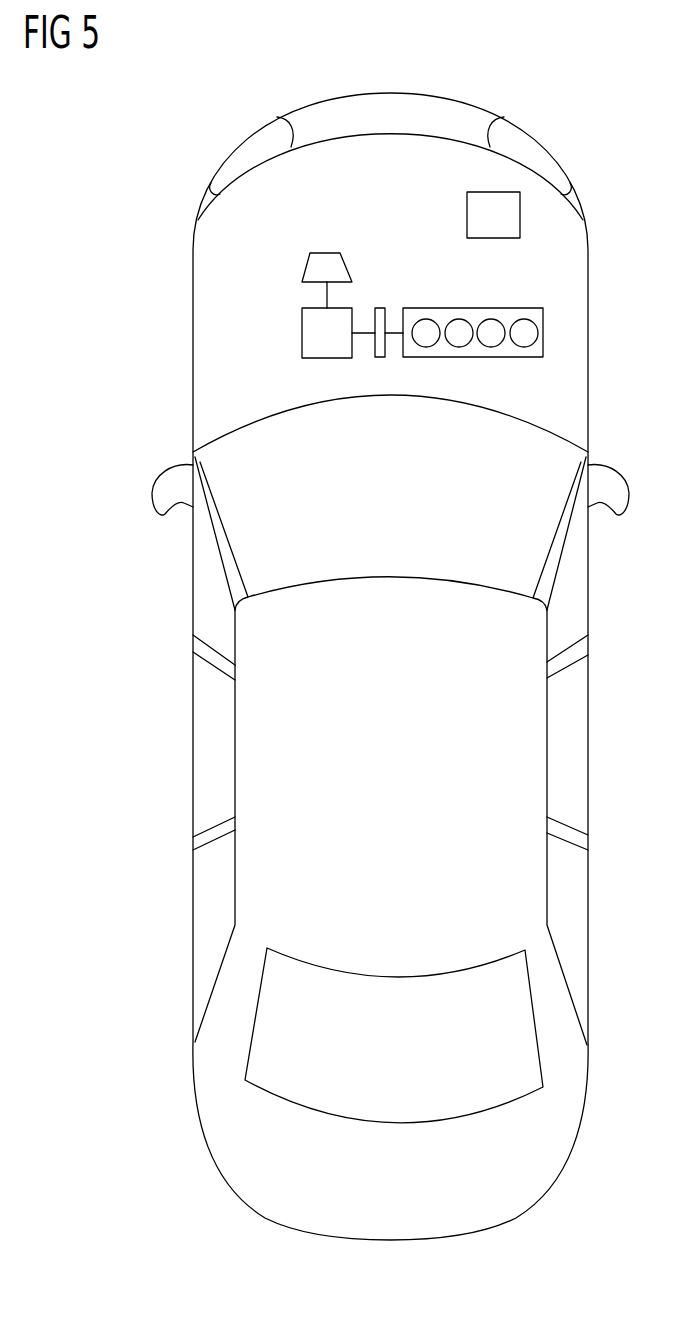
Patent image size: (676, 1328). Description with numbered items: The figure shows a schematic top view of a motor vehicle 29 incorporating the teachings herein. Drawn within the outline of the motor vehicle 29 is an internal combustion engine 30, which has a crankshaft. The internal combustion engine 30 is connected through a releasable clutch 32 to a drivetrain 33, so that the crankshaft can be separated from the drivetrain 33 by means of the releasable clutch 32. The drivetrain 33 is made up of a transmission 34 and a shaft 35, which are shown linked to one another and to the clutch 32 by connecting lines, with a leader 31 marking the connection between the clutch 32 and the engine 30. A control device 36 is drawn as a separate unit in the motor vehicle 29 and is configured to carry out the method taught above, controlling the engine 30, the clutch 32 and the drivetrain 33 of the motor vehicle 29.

The motor vehicle 29 is at (194, 715).
The internal combustion engine 30 is at (473, 357).
The connection line 31 is at (393, 333).
The releasable clutch 32 is at (380, 307).
The drivetrain 33 is at (383, 325).
The transmission 34 is at (302, 333).
The shaft 35 is at (363, 334).
The control device 36 is at (467, 215).